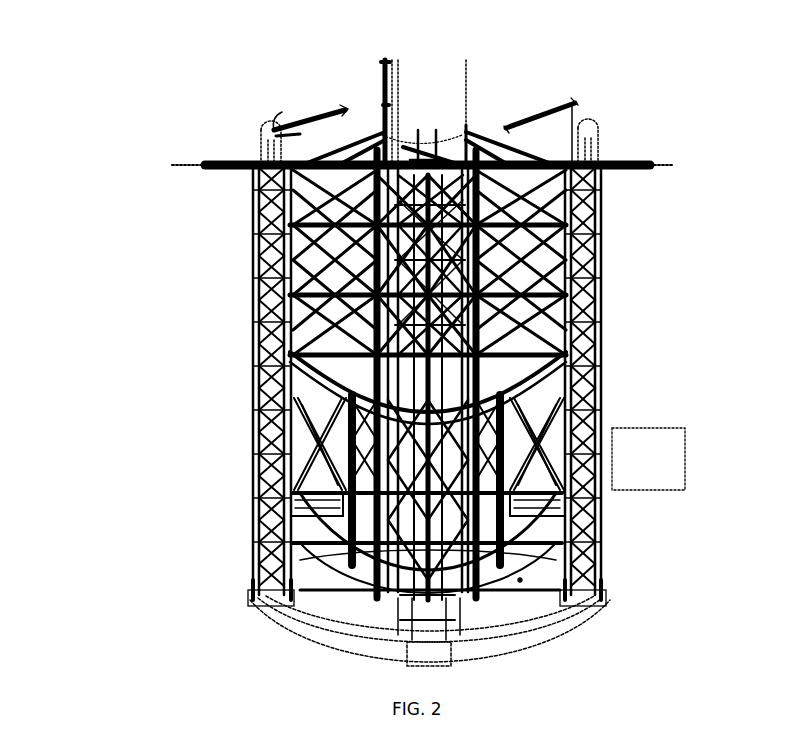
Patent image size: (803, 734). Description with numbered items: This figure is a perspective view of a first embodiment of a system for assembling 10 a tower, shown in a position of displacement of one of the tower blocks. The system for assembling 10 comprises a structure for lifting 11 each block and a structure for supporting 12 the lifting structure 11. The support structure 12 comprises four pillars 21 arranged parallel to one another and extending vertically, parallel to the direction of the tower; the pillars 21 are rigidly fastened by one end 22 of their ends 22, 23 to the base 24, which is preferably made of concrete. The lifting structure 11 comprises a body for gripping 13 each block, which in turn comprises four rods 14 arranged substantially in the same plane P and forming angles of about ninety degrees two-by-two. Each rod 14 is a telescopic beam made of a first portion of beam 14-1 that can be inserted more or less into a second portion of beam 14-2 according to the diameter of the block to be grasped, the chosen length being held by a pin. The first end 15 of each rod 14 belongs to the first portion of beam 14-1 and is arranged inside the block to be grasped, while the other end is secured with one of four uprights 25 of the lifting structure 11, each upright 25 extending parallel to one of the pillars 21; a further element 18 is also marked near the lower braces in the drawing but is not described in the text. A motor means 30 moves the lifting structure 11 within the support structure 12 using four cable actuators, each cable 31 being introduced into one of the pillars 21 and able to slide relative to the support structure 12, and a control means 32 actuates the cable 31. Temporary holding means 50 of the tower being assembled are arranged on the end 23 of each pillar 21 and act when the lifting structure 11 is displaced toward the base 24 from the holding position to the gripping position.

The system for assembling 10 is at (145, 398).
The structure for lifting 11 is at (302, 542).
The structure for supporting 12 is at (606, 388).
The body for gripping 13 is at (534, 592).
The rod 14 is at (297, 558).
The first portion of beam 14-1 is at (497, 560).
The second portion of beam 14-2 is at (598, 505).
The first end of the beam 15 is at (320, 452).
The brace 18 is at (537, 451).
The pillar 21 is at (252, 560).
The end of the pillar 22 is at (250, 600).
The end of the pillar 23 is at (250, 178).
The base 24 is at (248, 606).
The upright 25 is at (598, 450).
The motor means 30 is at (249, 122).
The cable 31 is at (310, 108).
The control means 32 is at (290, 152).
The temporary holding means 50 is at (540, 112).
The plane P is at (520, 582).